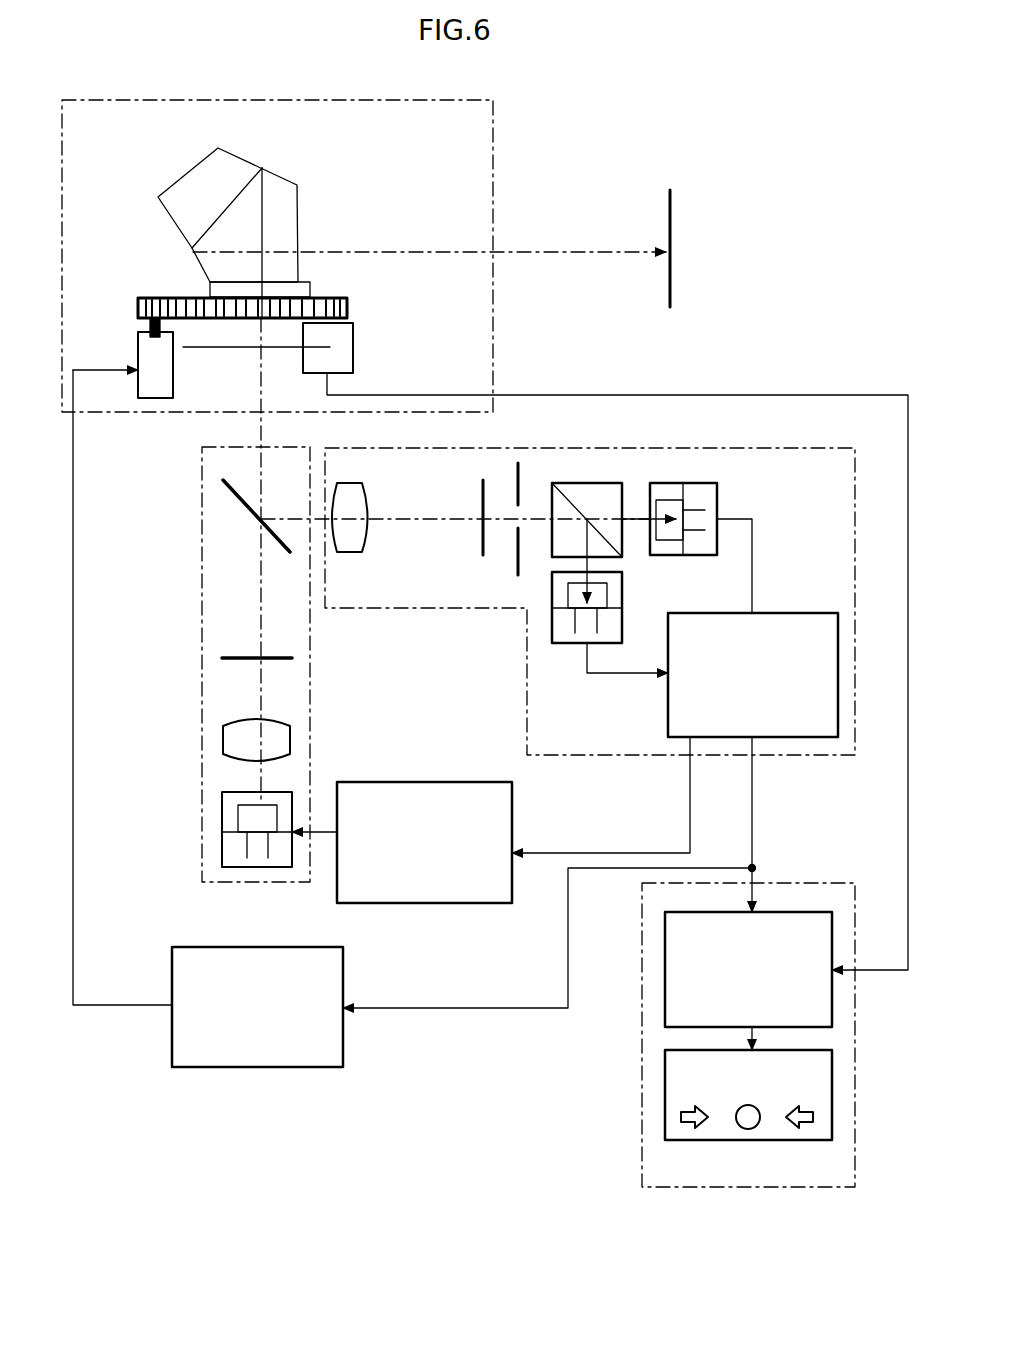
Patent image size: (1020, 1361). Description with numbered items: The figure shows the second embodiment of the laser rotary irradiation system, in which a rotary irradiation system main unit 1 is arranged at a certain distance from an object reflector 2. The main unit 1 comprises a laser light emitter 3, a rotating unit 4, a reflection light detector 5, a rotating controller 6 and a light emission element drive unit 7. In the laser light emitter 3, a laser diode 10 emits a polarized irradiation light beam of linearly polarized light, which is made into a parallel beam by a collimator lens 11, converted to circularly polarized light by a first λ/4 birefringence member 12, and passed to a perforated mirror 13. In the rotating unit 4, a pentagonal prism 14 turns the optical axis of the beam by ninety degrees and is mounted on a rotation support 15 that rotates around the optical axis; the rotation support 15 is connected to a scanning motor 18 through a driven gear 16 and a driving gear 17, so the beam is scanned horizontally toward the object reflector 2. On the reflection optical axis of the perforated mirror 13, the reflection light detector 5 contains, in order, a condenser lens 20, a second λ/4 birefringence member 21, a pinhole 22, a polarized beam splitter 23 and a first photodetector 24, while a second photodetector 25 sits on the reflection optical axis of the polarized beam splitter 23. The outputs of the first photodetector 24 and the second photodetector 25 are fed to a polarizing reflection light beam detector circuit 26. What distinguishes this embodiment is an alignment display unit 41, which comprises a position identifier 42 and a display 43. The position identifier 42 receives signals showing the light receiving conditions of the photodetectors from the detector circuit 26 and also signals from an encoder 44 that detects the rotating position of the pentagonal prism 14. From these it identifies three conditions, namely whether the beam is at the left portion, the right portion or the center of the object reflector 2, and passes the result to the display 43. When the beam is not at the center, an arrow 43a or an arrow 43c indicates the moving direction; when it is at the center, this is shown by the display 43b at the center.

The rotary irradiation system main unit 1 is at (812, 365).
The object reflector 2 is at (683, 283).
The laser light emitter 3 is at (202, 763).
The rotating unit 4 is at (493, 142).
The reflection light detector 5 is at (857, 577).
The rotating controller 6 is at (345, 1047).
The light emission element drive unit 7 is at (410, 905).
The laser diode 10 is at (222, 852).
The collimator lens 11 is at (230, 742).
The first λ/4 birefringence member 12 is at (230, 655).
The perforated mirror 13 is at (237, 500).
The pentagonal prism 14 is at (182, 178).
The rotation support 15 is at (305, 282).
The driven gear 16 is at (347, 308).
The driving gear 17 is at (138, 306).
The scanning motor 18 is at (163, 378).
The condenser lens 20 is at (367, 528).
The second λ/4 birefringence member 21 is at (478, 500).
The pinhole 22 is at (518, 463).
The polarized beam splitter 23 is at (605, 483).
The first photodetector 24 is at (705, 483).
The second photodetector 25 is at (552, 620).
The polarizing reflection light beam detector circuit 26 is at (668, 705).
The alignment display unit 41 is at (642, 1005).
The position identifier 42 is at (810, 912).
The display 43 is at (665, 1100).
The arrow 43a is at (687, 1127).
The display at the center 43b is at (748, 1130).
The arrow 43c is at (795, 1127).
The encoder 44 is at (355, 343).